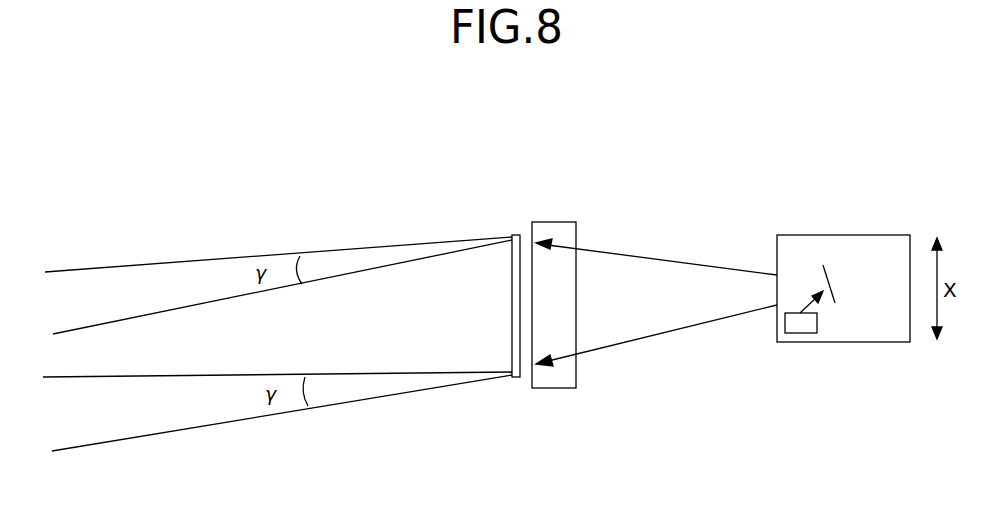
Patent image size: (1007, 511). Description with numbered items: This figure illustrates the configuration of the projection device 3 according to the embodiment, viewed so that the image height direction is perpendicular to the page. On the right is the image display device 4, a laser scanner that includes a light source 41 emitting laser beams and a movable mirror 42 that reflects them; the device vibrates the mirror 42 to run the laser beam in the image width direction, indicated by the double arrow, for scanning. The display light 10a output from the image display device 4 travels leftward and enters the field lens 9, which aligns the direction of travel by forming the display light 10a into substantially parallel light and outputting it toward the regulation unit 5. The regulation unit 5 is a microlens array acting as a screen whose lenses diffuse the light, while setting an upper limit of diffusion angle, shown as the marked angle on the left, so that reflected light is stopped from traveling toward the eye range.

The projection device 3 is at (619, 154).
The image display device 4 is at (807, 235).
The regulation unit 5 is at (518, 235).
The field lens 9 is at (564, 222).
The display light 10a is at (675, 248).
The light source 41 is at (800, 323).
The movable mirror 42 is at (829, 278).